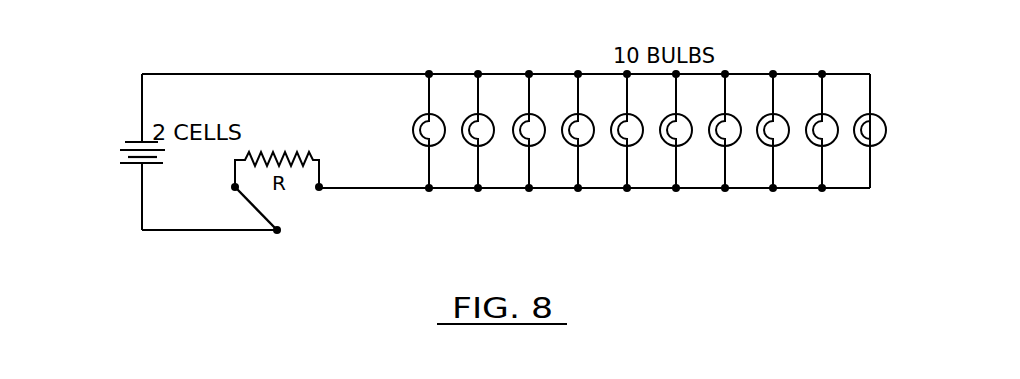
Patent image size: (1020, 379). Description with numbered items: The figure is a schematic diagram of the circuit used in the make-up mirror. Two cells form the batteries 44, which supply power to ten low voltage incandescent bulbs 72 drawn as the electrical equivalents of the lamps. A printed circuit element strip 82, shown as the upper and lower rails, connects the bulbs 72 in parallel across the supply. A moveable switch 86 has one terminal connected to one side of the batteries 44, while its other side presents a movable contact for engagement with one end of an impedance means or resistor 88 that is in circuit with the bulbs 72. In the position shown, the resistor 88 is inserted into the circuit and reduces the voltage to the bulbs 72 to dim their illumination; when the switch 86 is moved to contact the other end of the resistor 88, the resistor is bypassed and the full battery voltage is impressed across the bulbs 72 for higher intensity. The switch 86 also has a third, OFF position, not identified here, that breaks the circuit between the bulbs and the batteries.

The batteries 44 is at (117, 143).
The low voltage incandescent lamp 72 is at (765, 137).
The printed circuit element strip 82 is at (455, 73).
The moveable switch 86 is at (278, 236).
The resistor 88 is at (297, 170).